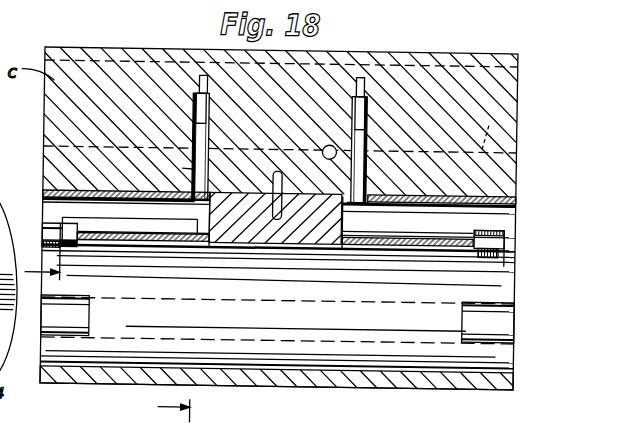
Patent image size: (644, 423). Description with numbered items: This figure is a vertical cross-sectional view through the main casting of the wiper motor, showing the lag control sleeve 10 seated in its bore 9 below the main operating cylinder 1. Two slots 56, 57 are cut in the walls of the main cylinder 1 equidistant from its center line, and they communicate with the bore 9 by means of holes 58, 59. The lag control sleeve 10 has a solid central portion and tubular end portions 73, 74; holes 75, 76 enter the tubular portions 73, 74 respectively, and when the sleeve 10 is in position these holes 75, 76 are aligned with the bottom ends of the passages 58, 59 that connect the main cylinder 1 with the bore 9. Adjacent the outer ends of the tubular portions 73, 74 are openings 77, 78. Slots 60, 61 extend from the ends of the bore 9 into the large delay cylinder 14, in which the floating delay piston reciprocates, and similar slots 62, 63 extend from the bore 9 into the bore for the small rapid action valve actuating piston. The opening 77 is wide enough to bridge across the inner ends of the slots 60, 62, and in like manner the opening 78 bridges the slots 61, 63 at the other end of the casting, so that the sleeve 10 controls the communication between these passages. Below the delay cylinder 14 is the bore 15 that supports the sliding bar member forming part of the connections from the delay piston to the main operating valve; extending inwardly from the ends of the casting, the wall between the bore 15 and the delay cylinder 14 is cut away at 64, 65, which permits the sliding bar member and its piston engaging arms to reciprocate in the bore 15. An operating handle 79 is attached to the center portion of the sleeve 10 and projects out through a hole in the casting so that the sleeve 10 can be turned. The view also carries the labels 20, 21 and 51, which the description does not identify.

The operating cylinder 1 is at (490, 129).
The bore 9 is at (53, 191).
The lag control sleeve 10 is at (46, 200).
The delay cylinder 14 is at (342, 357).
The bore 15 is at (304, 337).
The dimension 20 is at (173, 406).
The gap dimension 21 is at (109, 222).
The pivot pin 51 is at (329, 141).
The slot 56 is at (198, 77).
The slot 57 is at (369, 79).
The hole 58 is at (211, 155).
The hole 59 is at (367, 158).
The slot 60 is at (75, 246).
The slot 61 is at (491, 250).
The slot 62 is at (48, 226).
The slot 63 is at (481, 223).
The cut-away portion 64 is at (48, 320).
The cut-away portion 65 is at (466, 319).
The tubular end portion 73 is at (90, 190).
The tubular end portion 74 is at (429, 190).
The hole 75 is at (185, 201).
The hole 76 is at (354, 199).
The opening 77 is at (45, 244).
The opening 78 is at (500, 243).
The operating handle 79 is at (286, 184).